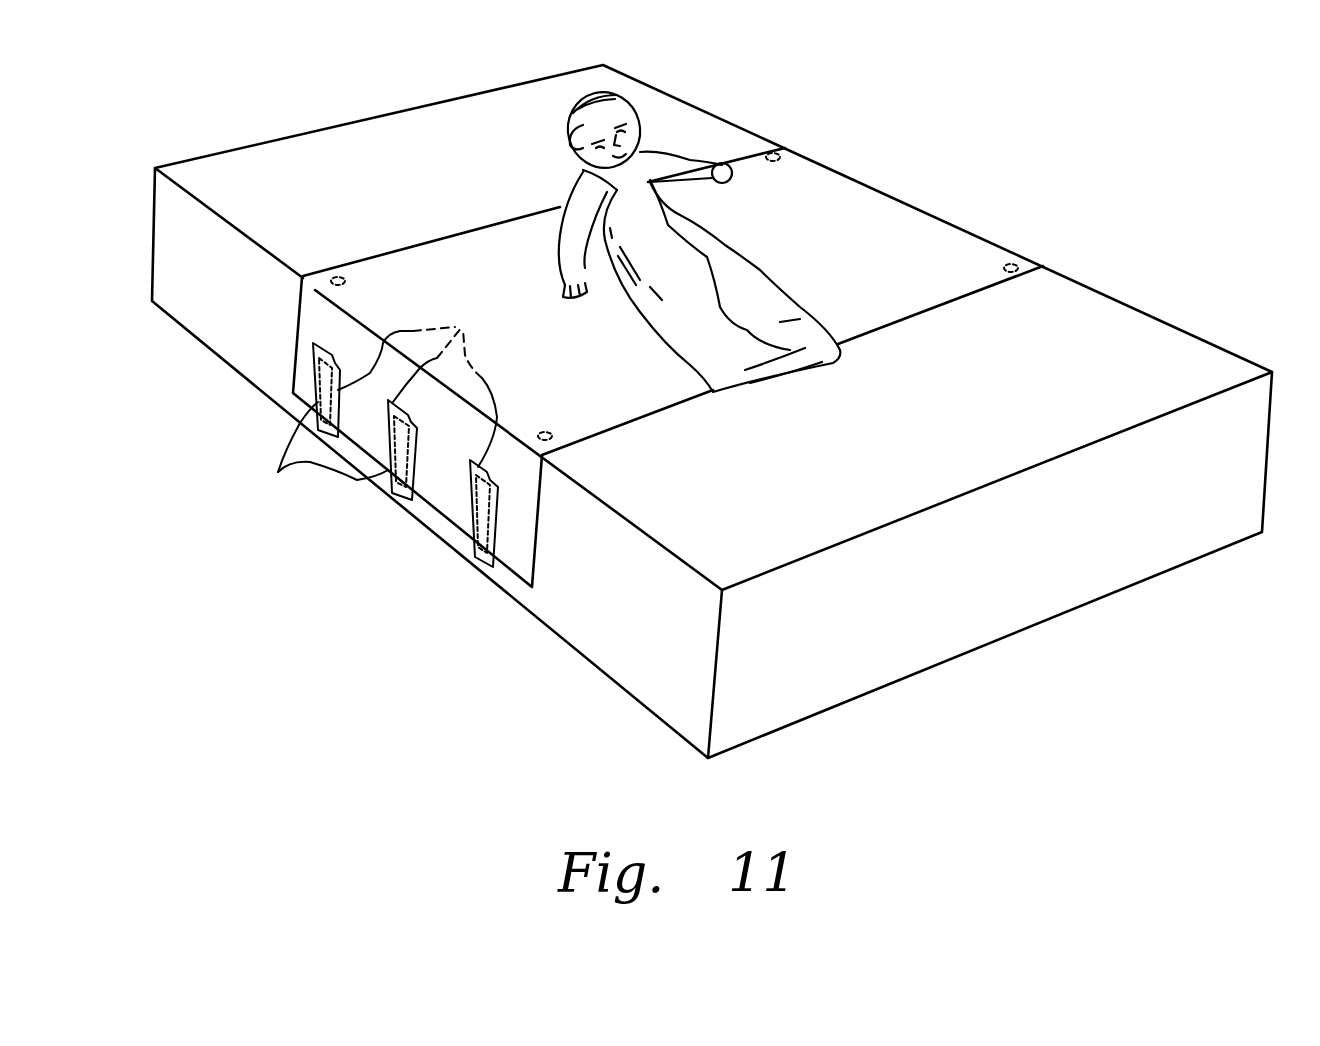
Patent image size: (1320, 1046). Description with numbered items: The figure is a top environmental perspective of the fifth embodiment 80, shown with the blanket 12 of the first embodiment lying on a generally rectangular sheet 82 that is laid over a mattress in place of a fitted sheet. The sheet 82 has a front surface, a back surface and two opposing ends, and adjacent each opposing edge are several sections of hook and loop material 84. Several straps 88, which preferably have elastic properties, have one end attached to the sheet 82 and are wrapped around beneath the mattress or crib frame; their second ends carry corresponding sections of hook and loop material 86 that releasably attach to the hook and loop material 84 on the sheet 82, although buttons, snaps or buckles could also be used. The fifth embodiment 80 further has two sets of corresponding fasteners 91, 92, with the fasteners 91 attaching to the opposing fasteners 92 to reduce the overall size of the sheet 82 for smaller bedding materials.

The fifth embodiment 80 is at (916, 171).
The sheet 82 is at (633, 421).
The fasteners 91 is at (343, 279).
The fasteners 92 is at (777, 156).
The blanket 12 is at (840, 352).
The straps 88 is at (338, 436).
The hook and loop material 84 is at (278, 472).
The hook and loop material 86 is at (463, 314).